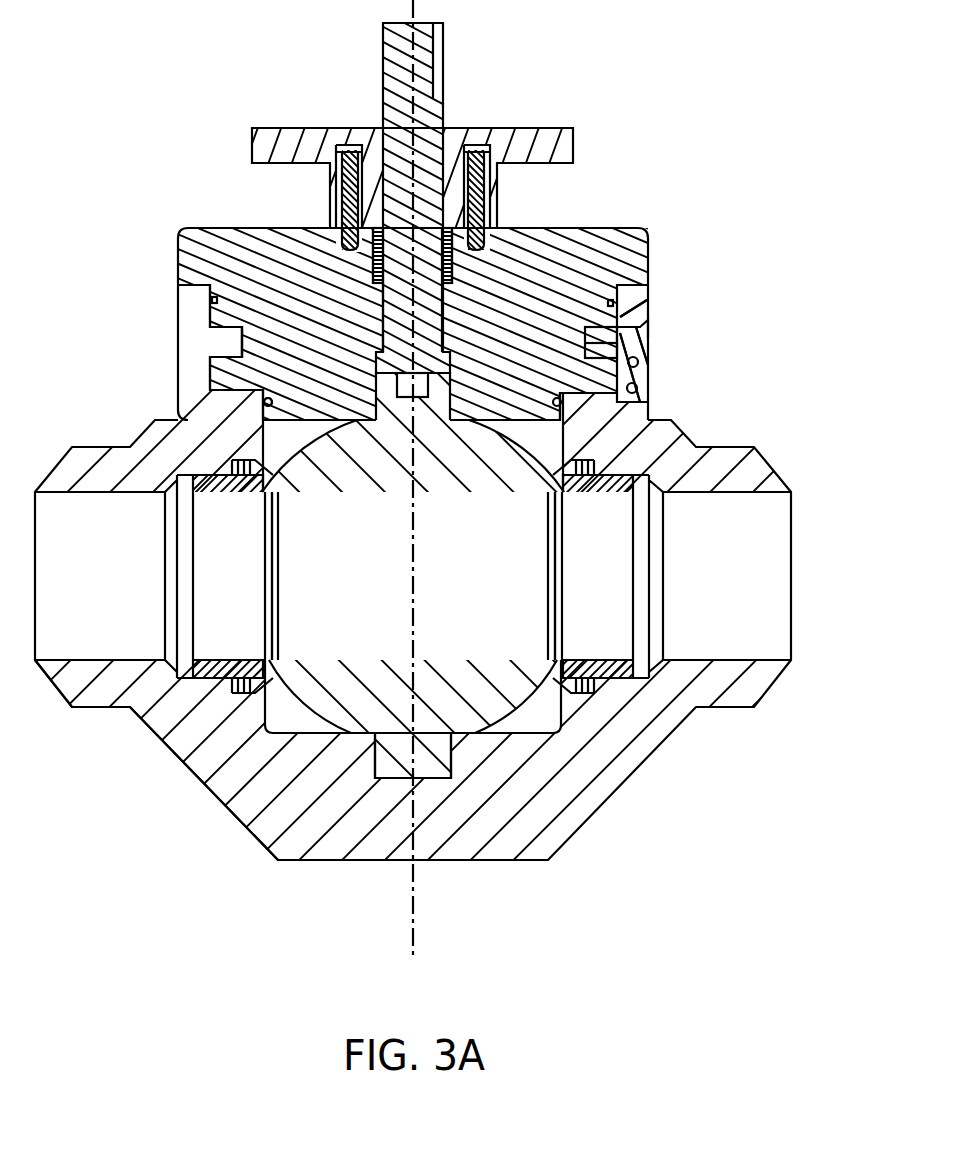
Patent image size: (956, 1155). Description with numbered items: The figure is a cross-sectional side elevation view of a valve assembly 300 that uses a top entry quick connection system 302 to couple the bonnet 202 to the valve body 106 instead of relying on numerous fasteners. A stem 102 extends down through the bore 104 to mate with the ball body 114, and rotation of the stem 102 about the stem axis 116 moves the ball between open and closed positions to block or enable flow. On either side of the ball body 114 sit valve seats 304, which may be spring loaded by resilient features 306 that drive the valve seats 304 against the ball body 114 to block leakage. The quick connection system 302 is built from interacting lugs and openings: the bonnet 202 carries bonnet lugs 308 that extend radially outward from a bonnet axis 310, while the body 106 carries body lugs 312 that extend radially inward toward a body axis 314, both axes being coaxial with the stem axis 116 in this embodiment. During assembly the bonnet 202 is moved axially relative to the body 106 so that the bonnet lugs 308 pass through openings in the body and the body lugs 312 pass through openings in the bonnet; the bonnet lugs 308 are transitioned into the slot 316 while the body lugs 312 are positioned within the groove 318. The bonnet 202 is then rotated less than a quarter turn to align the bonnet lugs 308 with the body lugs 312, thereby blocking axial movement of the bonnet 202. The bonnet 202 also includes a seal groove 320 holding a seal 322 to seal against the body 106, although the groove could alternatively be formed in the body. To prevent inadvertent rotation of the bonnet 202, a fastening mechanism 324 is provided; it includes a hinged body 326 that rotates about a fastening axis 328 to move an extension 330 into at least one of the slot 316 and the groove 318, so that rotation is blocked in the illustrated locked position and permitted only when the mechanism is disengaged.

The valve assembly 300 is at (660, 62).
The stem 102 is at (400, 75).
The bore 104 is at (382, 318).
The valve body 106 is at (748, 683).
The ball body 114 is at (493, 700).
The stem axis 116 is at (413, 895).
The bonnet 202 is at (632, 237).
The quick connection system 302 is at (158, 293).
The valve seats 304 is at (230, 485).
The resilient features 306 is at (173, 740).
The bonnet lugs 308 is at (628, 382).
The bonnet axis 310 is at (540, 550).
The body lugs 312 is at (230, 347).
The body axis 314 is at (526, 576).
The slot 316 is at (220, 372).
The groove 318 is at (601, 330).
The seal groove 320 is at (607, 418).
The seal 322 is at (266, 400).
The fastening mechanism 324 is at (660, 303).
The hinged body 326 is at (650, 333).
The fastening axis 328 is at (638, 353).
The extension 330 is at (598, 370).